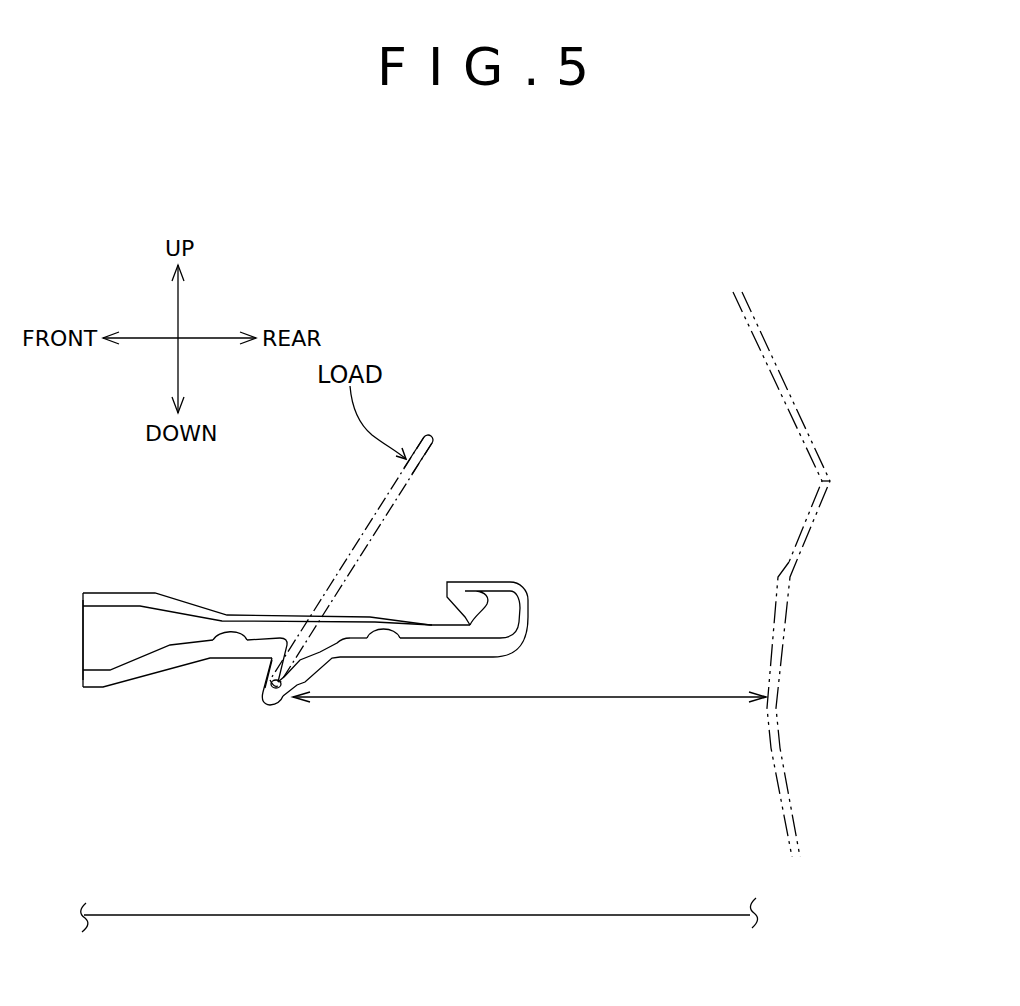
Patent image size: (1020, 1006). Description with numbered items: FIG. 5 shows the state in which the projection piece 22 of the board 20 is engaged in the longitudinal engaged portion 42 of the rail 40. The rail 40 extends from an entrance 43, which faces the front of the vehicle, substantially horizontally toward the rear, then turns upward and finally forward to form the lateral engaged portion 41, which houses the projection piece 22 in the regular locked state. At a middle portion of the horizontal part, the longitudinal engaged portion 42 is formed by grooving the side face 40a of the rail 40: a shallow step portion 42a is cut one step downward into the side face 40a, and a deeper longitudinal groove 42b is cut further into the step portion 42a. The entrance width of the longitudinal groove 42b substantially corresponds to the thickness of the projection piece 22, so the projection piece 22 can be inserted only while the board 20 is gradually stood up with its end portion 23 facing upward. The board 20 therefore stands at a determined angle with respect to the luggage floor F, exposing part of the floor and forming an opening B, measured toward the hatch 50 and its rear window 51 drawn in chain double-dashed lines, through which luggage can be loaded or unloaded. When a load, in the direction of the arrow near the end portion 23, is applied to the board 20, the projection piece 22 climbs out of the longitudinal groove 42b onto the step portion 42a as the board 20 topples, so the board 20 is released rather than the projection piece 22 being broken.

The board 20 is at (408, 479).
The projection piece 22 is at (266, 610).
The end portion 23 is at (435, 436).
The rail 40 is at (118, 616).
The side face 40a is at (212, 639).
The lateral engaged portion 41 is at (495, 573).
The longitudinal engaged portion 42 is at (387, 778).
The step portion 42a is at (333, 660).
The longitudinal groove 42b is at (285, 704).
The entrance 43 is at (82, 640).
The hatch 50 is at (782, 675).
The rear window 51 is at (792, 381).
The opening B is at (595, 697).
The luggage floor F is at (516, 915).